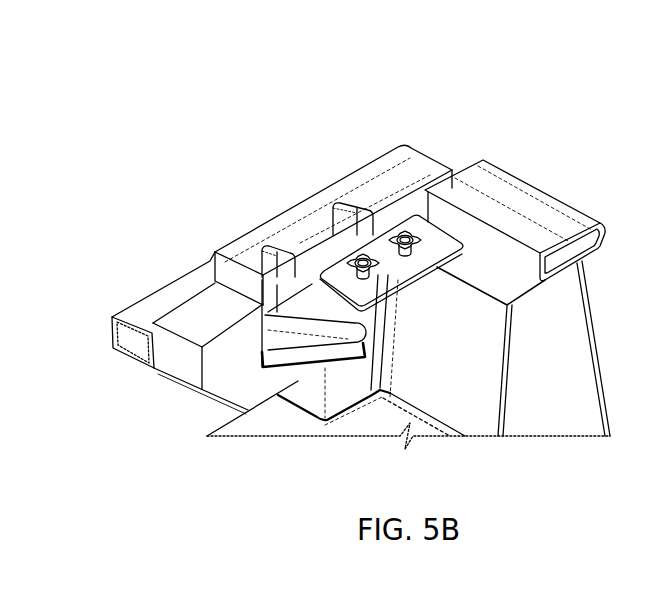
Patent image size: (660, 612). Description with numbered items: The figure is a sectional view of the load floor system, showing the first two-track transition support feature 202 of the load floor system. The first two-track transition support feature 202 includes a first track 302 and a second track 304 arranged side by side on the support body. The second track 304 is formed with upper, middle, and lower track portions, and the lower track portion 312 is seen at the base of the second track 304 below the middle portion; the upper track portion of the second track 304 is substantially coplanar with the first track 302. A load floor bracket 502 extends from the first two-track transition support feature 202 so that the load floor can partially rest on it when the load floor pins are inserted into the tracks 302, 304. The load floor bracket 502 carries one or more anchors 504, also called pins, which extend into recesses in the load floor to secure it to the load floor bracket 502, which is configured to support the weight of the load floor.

The first two-track transition support feature 202 is at (176, 174).
The first track 302 is at (355, 210).
The second track 304 is at (281, 253).
The lower track portion 312 is at (317, 360).
The load floor bracket 502 is at (437, 248).
The anchors 504 is at (378, 262).